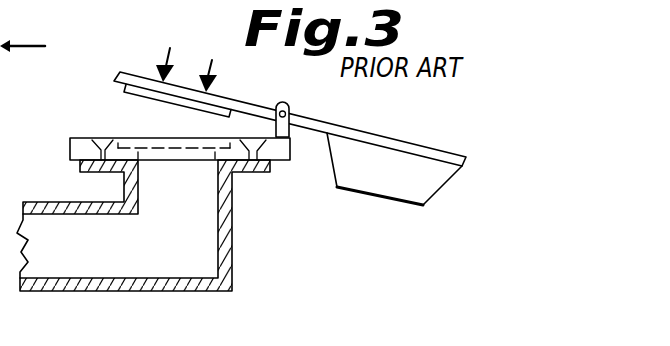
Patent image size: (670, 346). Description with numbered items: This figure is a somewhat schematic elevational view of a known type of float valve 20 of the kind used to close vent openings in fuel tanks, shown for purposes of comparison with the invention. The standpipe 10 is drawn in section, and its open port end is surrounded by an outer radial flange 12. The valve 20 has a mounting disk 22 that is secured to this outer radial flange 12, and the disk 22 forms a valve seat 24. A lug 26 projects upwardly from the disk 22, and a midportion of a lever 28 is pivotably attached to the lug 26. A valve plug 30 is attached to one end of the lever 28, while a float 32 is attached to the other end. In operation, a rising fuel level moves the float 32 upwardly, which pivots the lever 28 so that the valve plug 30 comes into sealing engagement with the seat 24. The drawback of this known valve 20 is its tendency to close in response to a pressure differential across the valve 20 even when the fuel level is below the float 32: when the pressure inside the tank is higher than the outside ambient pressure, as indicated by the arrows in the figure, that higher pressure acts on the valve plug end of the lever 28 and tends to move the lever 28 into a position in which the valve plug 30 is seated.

The standpipe 10 is at (232, 262).
The outer radial flange 12 is at (82, 171).
The float valve 20 is at (306, 105).
The mounting disk 22 is at (82, 138).
The valve seat 24 is at (232, 138).
The lug 26 is at (292, 137).
The lever 28 is at (322, 125).
The valve plug 30 is at (144, 98).
The float 32 is at (402, 205).